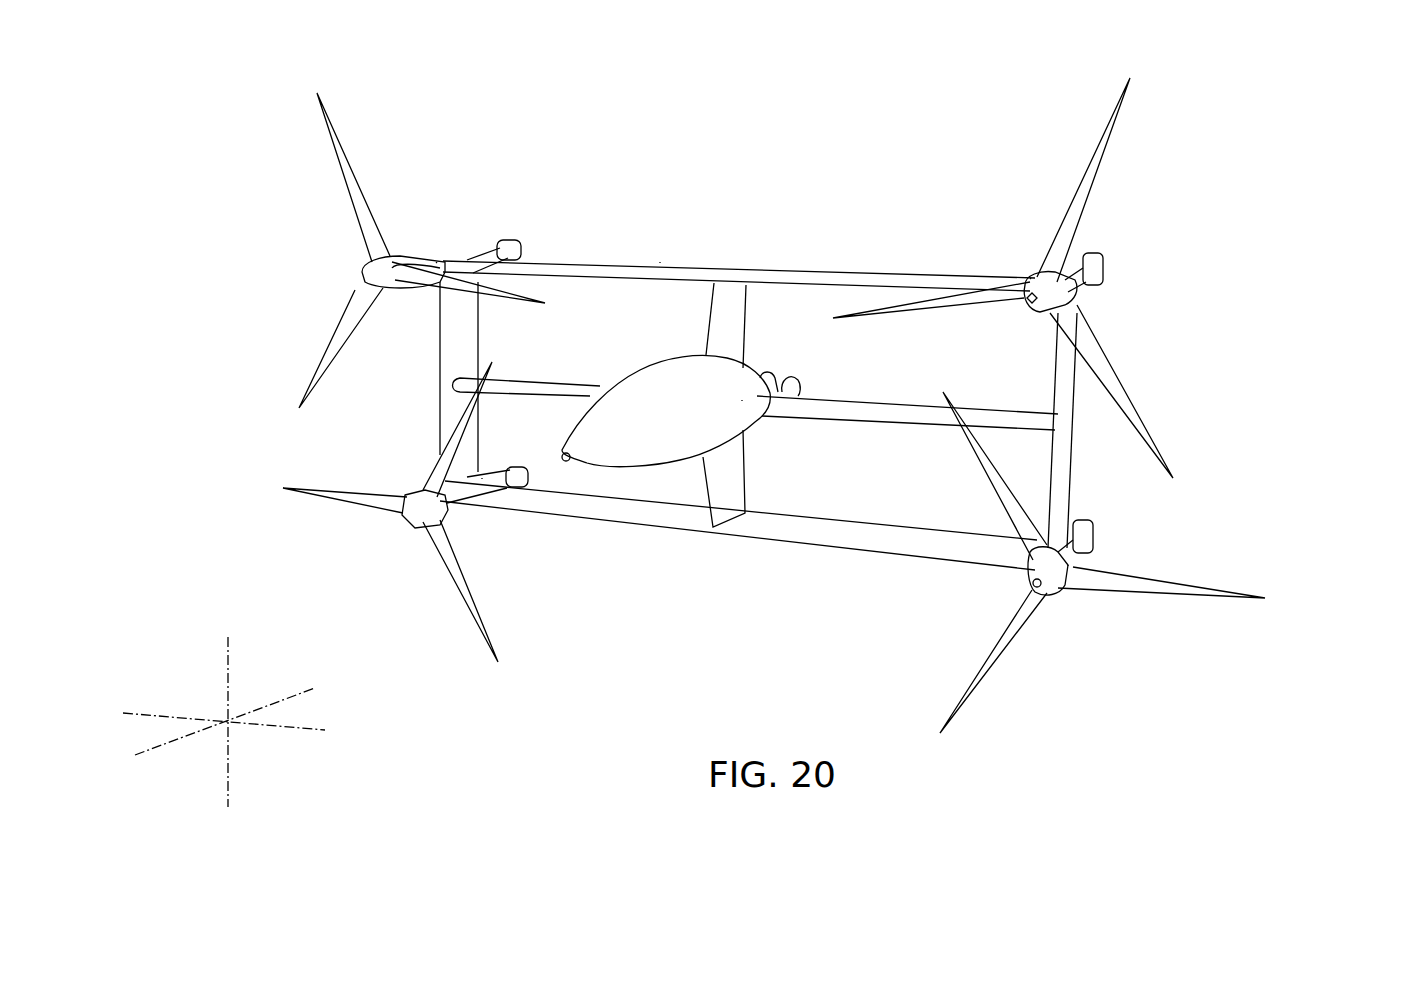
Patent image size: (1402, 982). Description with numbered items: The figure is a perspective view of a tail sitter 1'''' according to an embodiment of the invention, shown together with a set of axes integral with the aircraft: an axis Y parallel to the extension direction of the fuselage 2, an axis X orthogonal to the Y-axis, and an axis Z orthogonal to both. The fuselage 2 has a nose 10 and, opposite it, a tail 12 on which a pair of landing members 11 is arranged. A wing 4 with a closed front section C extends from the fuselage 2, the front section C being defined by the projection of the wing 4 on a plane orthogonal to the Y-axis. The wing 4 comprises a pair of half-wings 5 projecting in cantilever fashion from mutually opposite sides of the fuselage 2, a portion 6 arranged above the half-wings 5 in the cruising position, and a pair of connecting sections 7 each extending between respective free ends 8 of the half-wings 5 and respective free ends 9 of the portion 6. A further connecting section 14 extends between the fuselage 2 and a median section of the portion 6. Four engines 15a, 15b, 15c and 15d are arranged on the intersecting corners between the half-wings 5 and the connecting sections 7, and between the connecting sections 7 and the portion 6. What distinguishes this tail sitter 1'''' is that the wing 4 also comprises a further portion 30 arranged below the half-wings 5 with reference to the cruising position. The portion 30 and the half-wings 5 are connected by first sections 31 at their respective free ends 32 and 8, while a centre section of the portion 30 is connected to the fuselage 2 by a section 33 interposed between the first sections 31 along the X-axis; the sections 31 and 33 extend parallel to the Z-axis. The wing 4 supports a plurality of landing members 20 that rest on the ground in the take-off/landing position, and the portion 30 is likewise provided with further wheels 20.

The tail sitter 1'''' is at (732, 435).
The fuselage 2 is at (650, 380).
The wing 4 is at (855, 568).
The half-wings 5 is at (563, 385).
The portion 6 is at (800, 270).
The connecting sections 7 is at (452, 340).
The free ends 8 is at (438, 378).
The free ends 9 is at (438, 262).
The nose 10 is at (595, 455).
The landing members 11 is at (770, 378).
The tail 12 is at (741, 403).
The further connecting section 14 is at (740, 330).
The engine 15a is at (369, 538).
The engine 15b is at (1055, 640).
The engine 15c is at (403, 178).
The engine 15d is at (1142, 170).
The landing members 20 is at (509, 240).
The further portion 30 is at (780, 541).
The first sections 31 is at (488, 446).
The free ends 32 is at (483, 478).
The section 33 is at (740, 493).
The front section C is at (655, 260).
The X-axis X is at (135, 712).
The Y-axis Y is at (310, 680).
The Z-axis Z is at (228, 648).